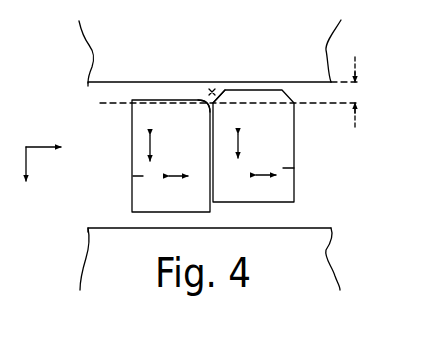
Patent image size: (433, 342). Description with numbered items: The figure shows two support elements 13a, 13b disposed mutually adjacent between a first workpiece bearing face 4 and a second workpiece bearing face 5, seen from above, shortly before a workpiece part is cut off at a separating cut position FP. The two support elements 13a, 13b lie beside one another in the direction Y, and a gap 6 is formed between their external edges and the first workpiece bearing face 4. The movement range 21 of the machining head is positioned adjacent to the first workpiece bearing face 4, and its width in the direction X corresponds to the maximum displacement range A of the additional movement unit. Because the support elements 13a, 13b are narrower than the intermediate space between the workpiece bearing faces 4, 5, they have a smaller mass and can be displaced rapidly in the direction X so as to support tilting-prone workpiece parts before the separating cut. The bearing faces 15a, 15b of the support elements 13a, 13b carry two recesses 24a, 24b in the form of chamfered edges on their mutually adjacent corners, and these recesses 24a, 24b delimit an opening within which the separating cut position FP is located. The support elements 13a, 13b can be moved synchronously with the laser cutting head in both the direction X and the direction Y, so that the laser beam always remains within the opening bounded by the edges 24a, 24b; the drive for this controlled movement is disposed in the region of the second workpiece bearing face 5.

The first workpiece bearing face 4 is at (117, 48).
The second workpiece bearing face 5 is at (118, 255).
The gap 6 is at (259, 81).
The support element 13a is at (129, 118).
The support element 13b is at (299, 120).
The bearing face 15a is at (132, 177).
The bearing face 15b is at (296, 172).
The movement range 21 is at (313, 90).
The recess 24a is at (207, 100).
The recess 24b is at (218, 98).
The separating cut position FP is at (211, 89).
The maximum displacement range A is at (355, 92).
The direction X is at (25, 180).
The direction Y is at (52, 147).